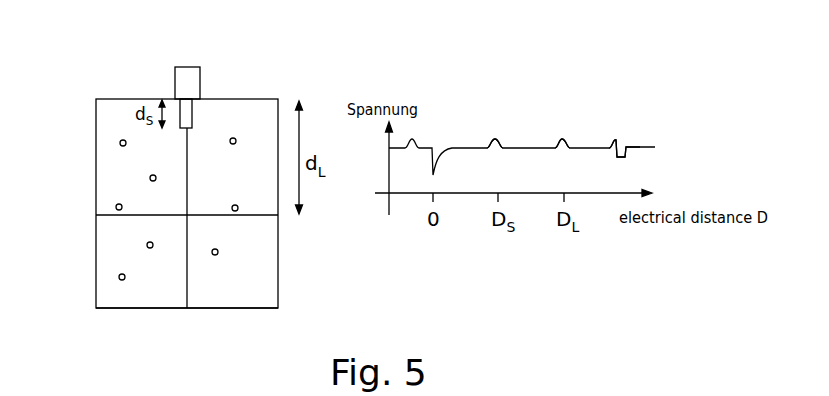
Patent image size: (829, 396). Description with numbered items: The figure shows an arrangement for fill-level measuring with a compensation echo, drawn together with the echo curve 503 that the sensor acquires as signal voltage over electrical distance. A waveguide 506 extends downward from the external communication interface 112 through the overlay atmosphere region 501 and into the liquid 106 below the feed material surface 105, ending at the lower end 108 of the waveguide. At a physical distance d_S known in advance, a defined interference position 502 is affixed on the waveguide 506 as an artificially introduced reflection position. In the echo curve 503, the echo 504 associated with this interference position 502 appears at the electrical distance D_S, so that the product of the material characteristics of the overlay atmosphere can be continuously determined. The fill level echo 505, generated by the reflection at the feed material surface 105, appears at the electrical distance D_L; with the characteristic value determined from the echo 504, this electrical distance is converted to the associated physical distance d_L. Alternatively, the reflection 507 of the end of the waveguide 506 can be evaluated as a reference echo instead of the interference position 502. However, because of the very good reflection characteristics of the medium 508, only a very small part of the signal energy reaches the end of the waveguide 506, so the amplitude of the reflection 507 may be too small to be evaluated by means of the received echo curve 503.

The external communication interface 112 is at (175, 85).
The defined interference position 502 is at (194, 118).
The first medium (liquid) 501 is at (110, 166).
The medium 508 is at (113, 252).
The feed material surface 105 is at (263, 215).
The liquid 106 is at (267, 260).
The waveguide 506 is at (190, 309).
The lower end of the waveguide 108 is at (265, 309).
The echo curve 503 is at (520, 147).
The echo of the interference position 504 is at (494, 139).
The fill level echo 505 is at (561, 150).
The reflection of the end of the waveguide 507 is at (615, 139).